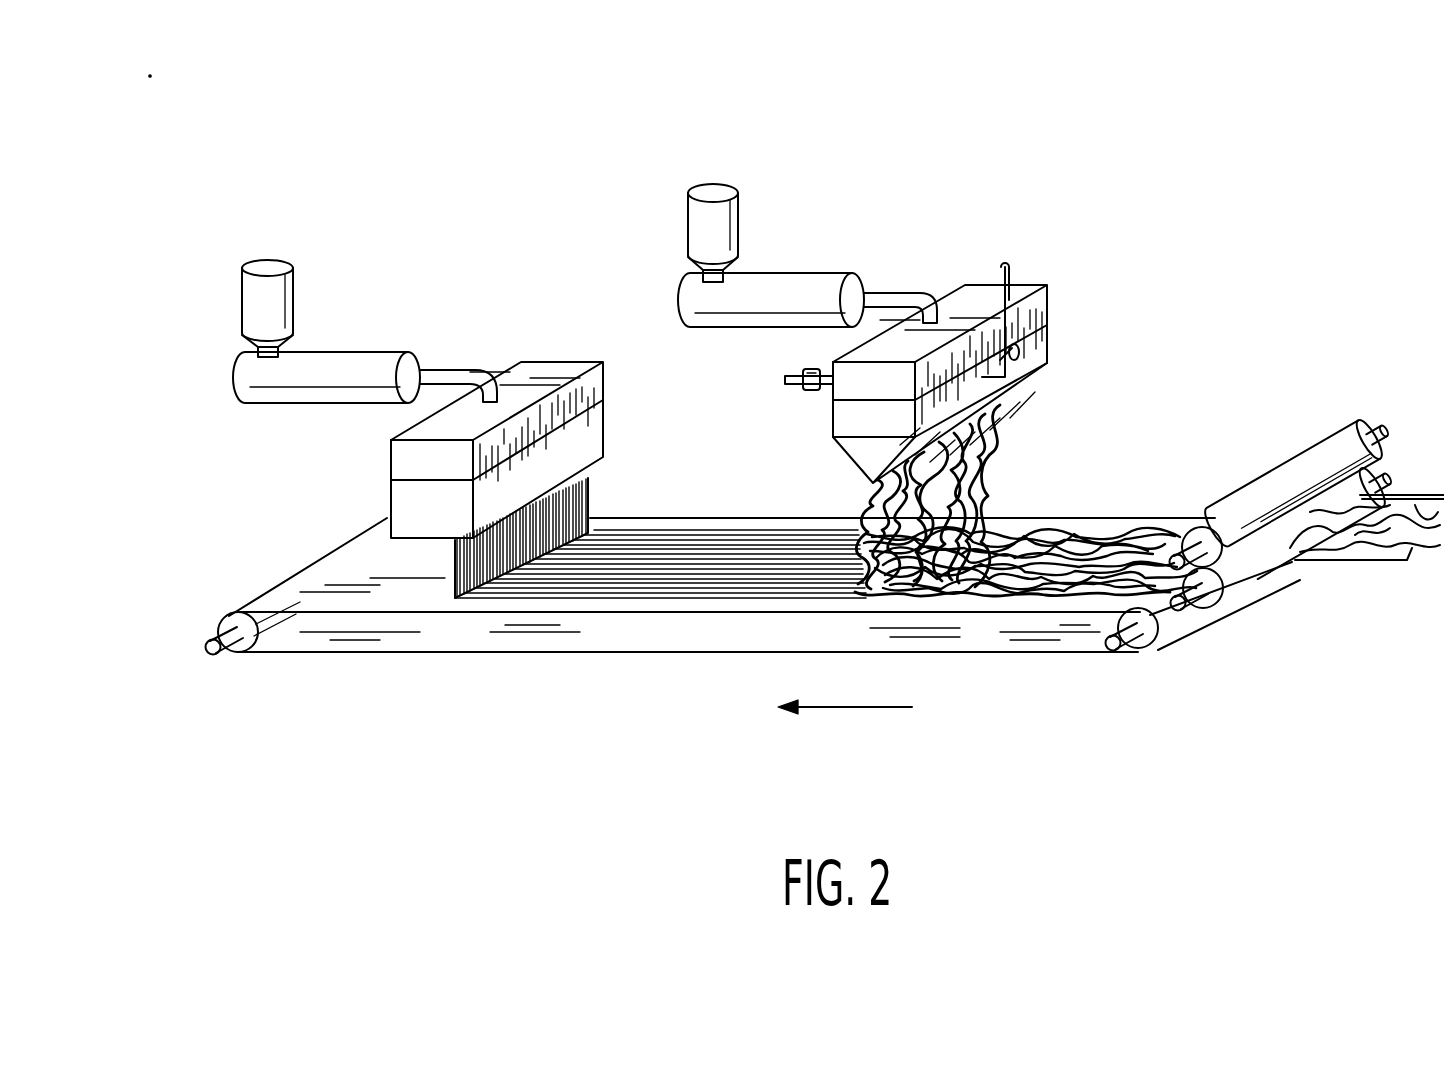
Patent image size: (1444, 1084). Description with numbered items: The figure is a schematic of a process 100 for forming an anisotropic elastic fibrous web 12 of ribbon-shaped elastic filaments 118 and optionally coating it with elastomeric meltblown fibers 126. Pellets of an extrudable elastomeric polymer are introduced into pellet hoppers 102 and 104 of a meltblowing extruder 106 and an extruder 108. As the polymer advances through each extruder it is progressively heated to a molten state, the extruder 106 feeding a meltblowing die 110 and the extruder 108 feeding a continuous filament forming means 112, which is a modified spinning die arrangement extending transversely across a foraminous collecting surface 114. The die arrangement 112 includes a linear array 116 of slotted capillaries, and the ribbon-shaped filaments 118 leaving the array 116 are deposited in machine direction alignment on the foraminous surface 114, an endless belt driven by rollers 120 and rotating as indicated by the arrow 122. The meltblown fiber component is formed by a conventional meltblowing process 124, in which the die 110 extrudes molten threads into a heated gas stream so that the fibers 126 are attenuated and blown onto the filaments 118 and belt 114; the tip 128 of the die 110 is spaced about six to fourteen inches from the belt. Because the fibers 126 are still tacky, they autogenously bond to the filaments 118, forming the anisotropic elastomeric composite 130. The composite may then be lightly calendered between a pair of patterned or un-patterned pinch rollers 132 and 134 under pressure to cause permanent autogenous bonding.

The anisotropic elastic fibrous web 12 is at (702, 527).
The process 100 is at (1108, 192).
The pellet hopper 102 is at (690, 214).
The pellet hopper 104 is at (242, 292).
The meltblowing extruder 106 is at (778, 292).
The extruder 108 is at (352, 350).
The meltblowing die 110 is at (1052, 308).
The continuous filament forming means 112 is at (527, 362).
The foraminous collecting surface 114 is at (299, 570).
The linear array of slotted capillaries 116 is at (447, 540).
The elastic filaments 118 is at (655, 543).
The rollers 120 is at (222, 628).
The arrow 122 is at (866, 710).
The meltblowing process 124 is at (850, 245).
The elastomeric meltblown fibers 126 is at (1004, 435).
The die tip 128 is at (860, 497).
The anisotropic elastomeric composite 130 is at (1108, 530).
The pinch roller 132 is at (1337, 458).
The pinch roller 134 is at (1258, 578).